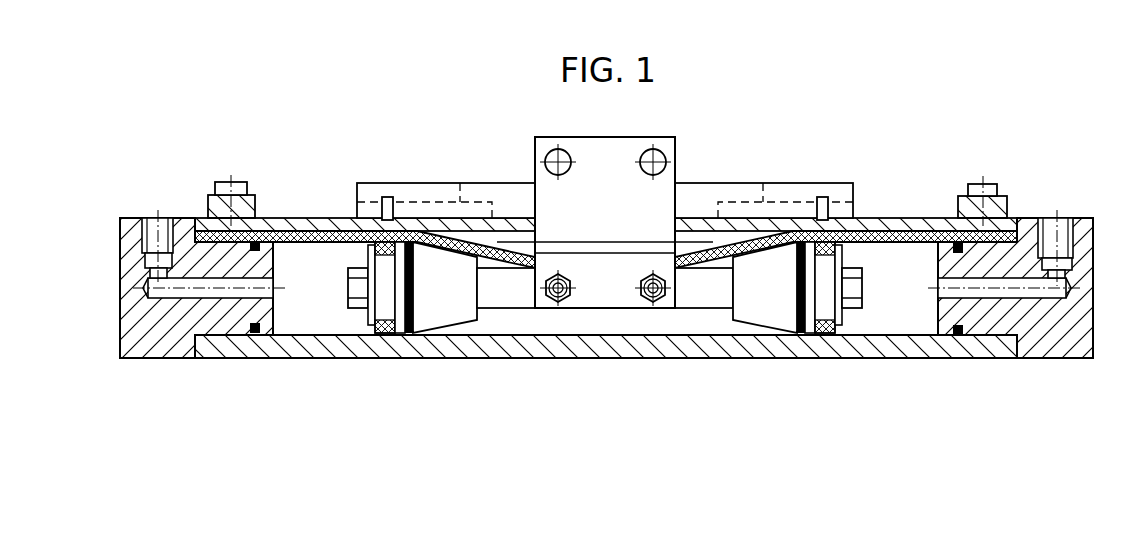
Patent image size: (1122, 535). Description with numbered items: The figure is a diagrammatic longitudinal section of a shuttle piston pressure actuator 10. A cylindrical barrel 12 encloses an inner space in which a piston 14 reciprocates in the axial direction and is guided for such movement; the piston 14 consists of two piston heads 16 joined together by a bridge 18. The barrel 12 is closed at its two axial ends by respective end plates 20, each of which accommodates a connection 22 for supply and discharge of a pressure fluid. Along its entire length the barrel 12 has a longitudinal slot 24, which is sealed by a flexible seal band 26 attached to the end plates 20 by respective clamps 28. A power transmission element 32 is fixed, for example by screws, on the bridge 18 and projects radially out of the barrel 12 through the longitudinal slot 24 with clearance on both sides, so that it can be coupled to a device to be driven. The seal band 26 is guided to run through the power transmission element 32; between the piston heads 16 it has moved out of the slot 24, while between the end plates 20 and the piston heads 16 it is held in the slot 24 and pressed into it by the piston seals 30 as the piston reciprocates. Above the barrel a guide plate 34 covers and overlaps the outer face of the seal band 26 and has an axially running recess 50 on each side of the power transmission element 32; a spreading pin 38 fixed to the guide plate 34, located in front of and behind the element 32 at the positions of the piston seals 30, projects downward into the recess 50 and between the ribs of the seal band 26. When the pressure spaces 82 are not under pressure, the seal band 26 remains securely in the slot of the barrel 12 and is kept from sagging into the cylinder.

The shuttle piston pressure actuator 10 is at (273, 358).
The cylindrical barrel 12 is at (413, 345).
The piston 14 is at (517, 309).
The piston heads 16 is at (778, 322).
The bridge 18 is at (697, 300).
The end plates 20 is at (1052, 348).
The connection 22 is at (1062, 233).
The longitudinal slot 24 is at (503, 237).
The seal band 26 is at (312, 222).
The clamps 28 is at (257, 210).
The piston seals 30 is at (823, 322).
The power transmission element 32 is at (610, 162).
The guide plate 34 is at (718, 193).
The spreading pin 38 is at (388, 197).
The recess 50 is at (462, 193).
The pressure spaces 82 is at (311, 318).